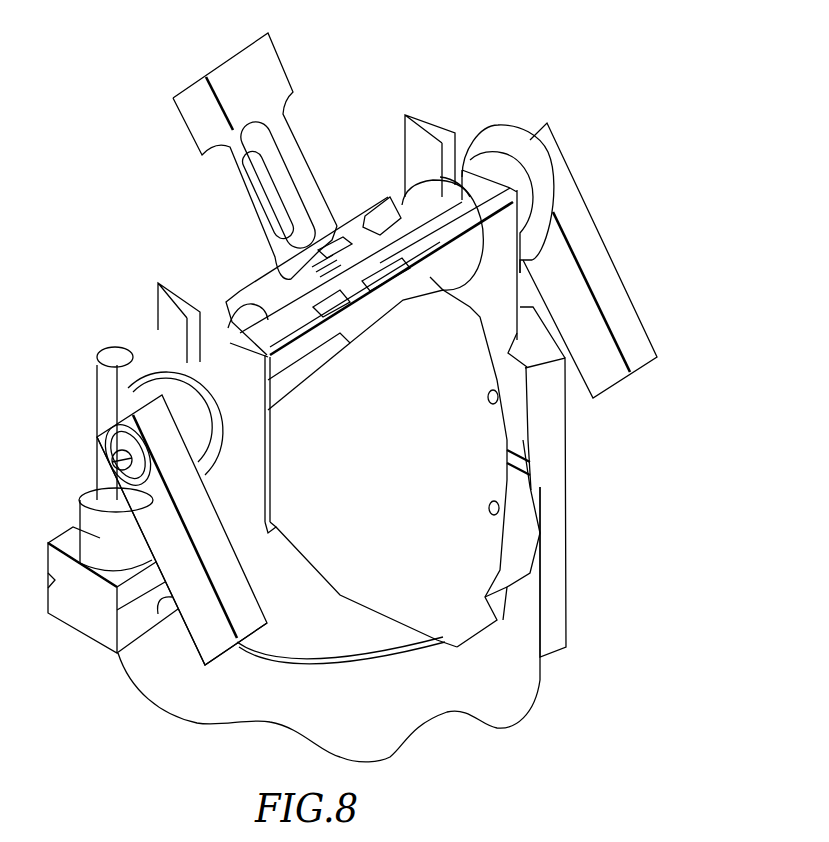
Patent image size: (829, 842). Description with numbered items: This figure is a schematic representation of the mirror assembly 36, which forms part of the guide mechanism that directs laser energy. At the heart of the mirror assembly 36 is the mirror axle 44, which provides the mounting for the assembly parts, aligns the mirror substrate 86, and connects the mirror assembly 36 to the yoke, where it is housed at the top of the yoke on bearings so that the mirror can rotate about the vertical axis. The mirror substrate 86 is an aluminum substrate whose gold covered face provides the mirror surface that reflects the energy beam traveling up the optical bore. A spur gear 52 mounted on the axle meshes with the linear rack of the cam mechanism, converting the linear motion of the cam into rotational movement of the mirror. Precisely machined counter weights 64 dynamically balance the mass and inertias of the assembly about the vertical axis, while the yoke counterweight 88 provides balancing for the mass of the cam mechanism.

The mirror assembly 36 is at (573, 88).
The mirror axle 44 is at (423, 193).
The spur gear 52 is at (157, 370).
The counter weights 64 is at (282, 81).
The mirror substrate 86 is at (503, 217).
The yoke counterweight 88 is at (557, 457).